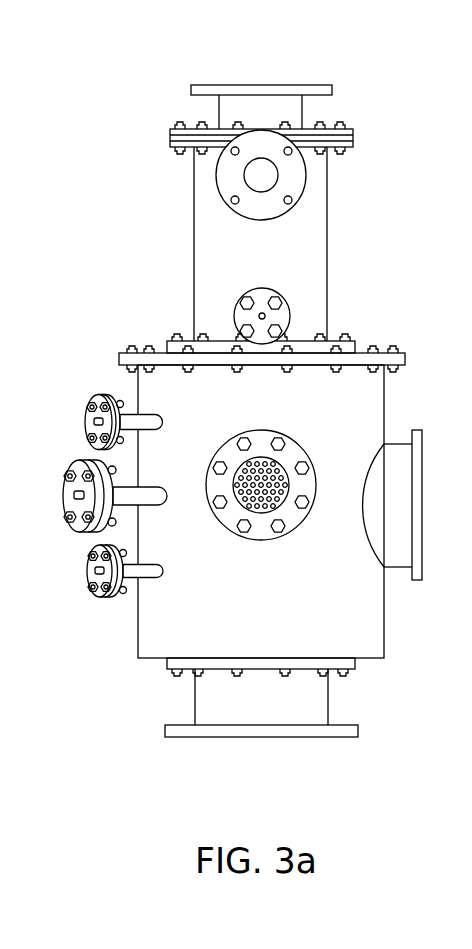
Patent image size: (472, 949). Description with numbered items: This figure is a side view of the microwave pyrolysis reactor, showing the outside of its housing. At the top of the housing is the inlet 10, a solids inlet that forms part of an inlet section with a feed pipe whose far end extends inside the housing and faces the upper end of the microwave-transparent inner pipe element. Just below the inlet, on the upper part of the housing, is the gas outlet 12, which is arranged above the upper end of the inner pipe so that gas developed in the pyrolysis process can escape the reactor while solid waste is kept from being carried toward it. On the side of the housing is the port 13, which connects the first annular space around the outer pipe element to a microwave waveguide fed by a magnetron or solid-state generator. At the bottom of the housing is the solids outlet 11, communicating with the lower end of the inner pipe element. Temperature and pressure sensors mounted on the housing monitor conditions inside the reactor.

The inlet 10 is at (243, 85).
The solids outlet 11 is at (265, 737).
The gas outlet 12 is at (258, 316).
The port 13 is at (417, 515).